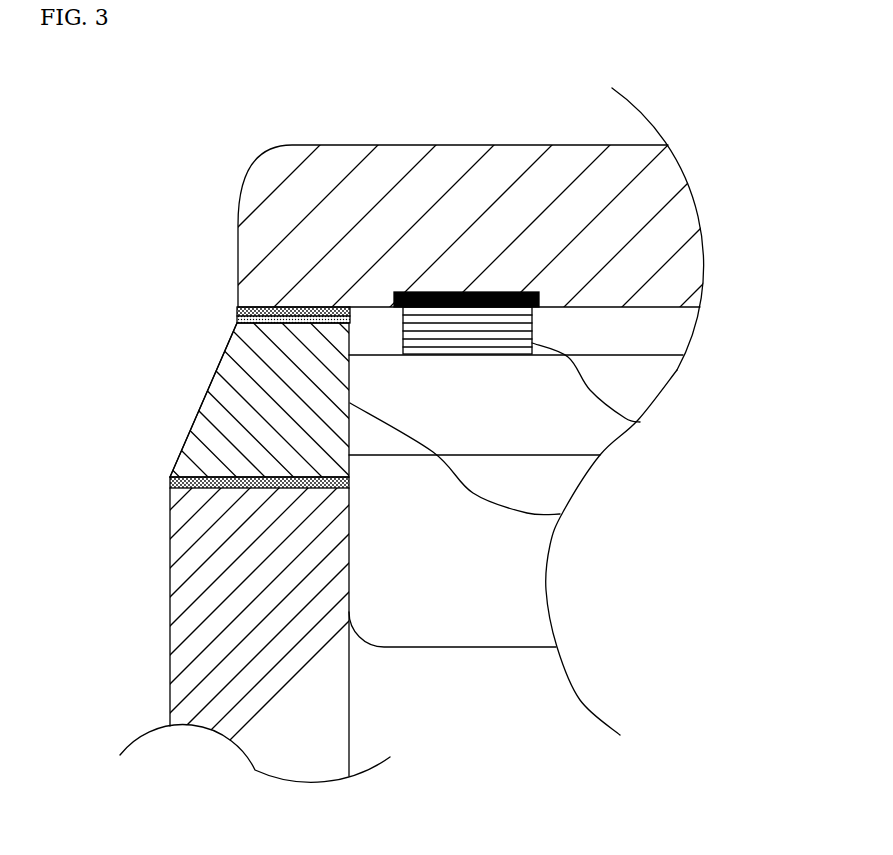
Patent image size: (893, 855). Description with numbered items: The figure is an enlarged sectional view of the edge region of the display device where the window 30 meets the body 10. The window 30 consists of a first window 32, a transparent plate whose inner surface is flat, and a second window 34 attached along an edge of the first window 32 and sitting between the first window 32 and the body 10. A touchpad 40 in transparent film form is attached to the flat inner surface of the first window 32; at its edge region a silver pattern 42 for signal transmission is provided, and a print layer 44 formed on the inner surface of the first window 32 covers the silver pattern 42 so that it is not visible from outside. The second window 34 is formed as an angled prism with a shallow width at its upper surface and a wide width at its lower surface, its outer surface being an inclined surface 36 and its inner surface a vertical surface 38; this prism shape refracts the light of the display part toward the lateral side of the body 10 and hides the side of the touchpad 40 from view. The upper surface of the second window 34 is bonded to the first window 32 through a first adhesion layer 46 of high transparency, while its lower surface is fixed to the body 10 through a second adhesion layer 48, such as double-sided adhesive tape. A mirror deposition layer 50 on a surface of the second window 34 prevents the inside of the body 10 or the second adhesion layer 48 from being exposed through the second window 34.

The body 10 is at (257, 727).
The window 30 is at (260, 396).
The first window 32 is at (243, 298).
The second window 34 is at (140, 293).
The inclined surface 36 is at (188, 435).
The vertical surface 38 is at (560, 514).
The touchpad 40 is at (678, 330).
The silver pattern 42 is at (640, 422).
The print layer 44 is at (490, 292).
The first adhesion layer 46 is at (304, 307).
The second adhesion layer 48 is at (170, 478).
The mirror deposition layer 50 is at (333, 307).